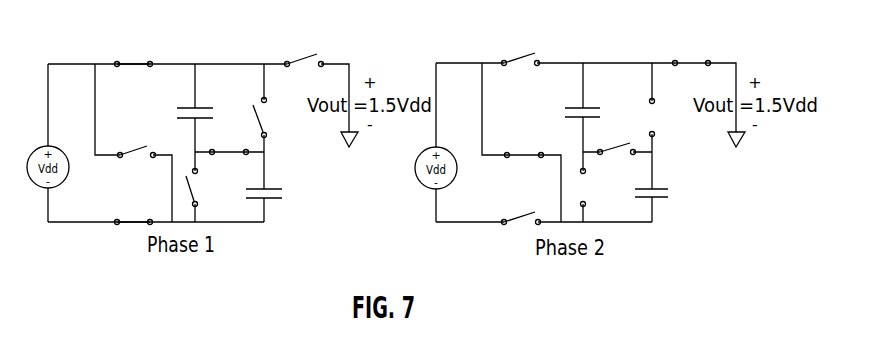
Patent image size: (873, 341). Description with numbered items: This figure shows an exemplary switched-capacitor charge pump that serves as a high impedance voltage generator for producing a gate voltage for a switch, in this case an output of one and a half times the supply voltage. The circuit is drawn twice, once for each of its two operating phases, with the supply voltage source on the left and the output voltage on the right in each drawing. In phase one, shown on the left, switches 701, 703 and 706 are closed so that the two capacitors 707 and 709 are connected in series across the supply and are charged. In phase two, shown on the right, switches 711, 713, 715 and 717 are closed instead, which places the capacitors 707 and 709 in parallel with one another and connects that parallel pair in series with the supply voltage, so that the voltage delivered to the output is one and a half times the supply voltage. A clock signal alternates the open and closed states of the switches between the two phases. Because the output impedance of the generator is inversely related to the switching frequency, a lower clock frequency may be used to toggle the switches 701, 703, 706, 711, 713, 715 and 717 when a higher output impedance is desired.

The switch 701 is at (136, 62).
The switch 703 is at (126, 226).
The switch 706 is at (236, 156).
The capacitor 707 is at (200, 107).
The capacitor 709 is at (283, 195).
The switch 711 is at (527, 152).
The switch 713 is at (585, 180).
The switch 715 is at (691, 60).
The switch 717 is at (647, 113).